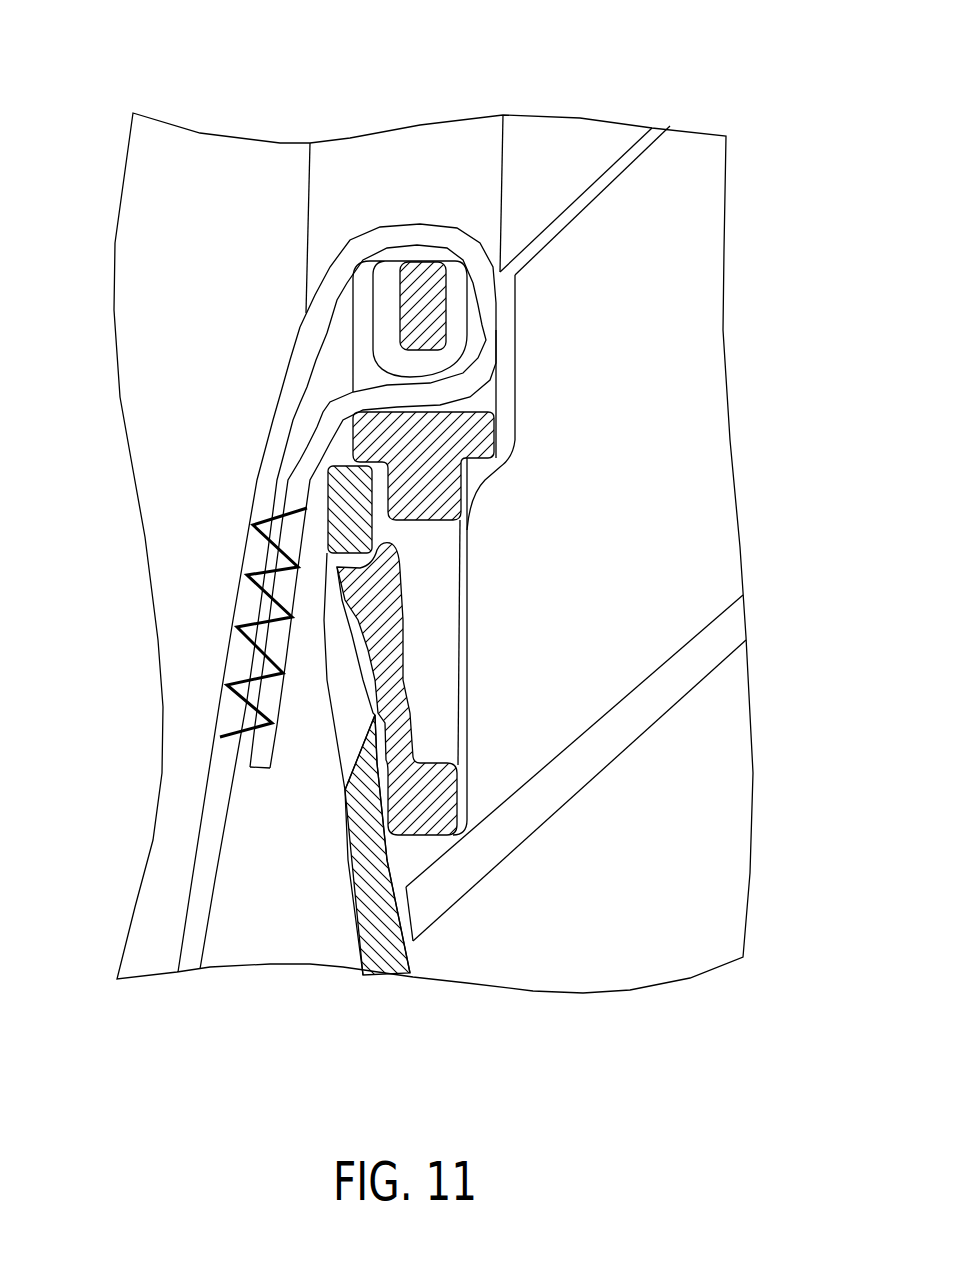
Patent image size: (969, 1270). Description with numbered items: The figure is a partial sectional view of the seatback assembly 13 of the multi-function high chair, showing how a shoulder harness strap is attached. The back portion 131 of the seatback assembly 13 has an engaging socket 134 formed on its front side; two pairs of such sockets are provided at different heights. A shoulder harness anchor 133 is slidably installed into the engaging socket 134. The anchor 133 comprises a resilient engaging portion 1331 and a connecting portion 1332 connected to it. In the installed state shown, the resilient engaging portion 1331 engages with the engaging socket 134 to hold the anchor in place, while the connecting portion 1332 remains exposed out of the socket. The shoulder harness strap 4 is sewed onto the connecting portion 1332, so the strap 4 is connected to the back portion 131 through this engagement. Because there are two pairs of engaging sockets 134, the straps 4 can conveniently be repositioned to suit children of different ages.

The seatback assembly 13 is at (745, 82).
The back portion 131 is at (687, 377).
The shoulder harness anchor 133 is at (620, 325).
The resilient engaging portion 1331 is at (433, 320).
The connecting portion 1332 is at (372, 630).
The engaging socket 134 is at (260, 272).
The shoulder harness strap 4 is at (273, 450).